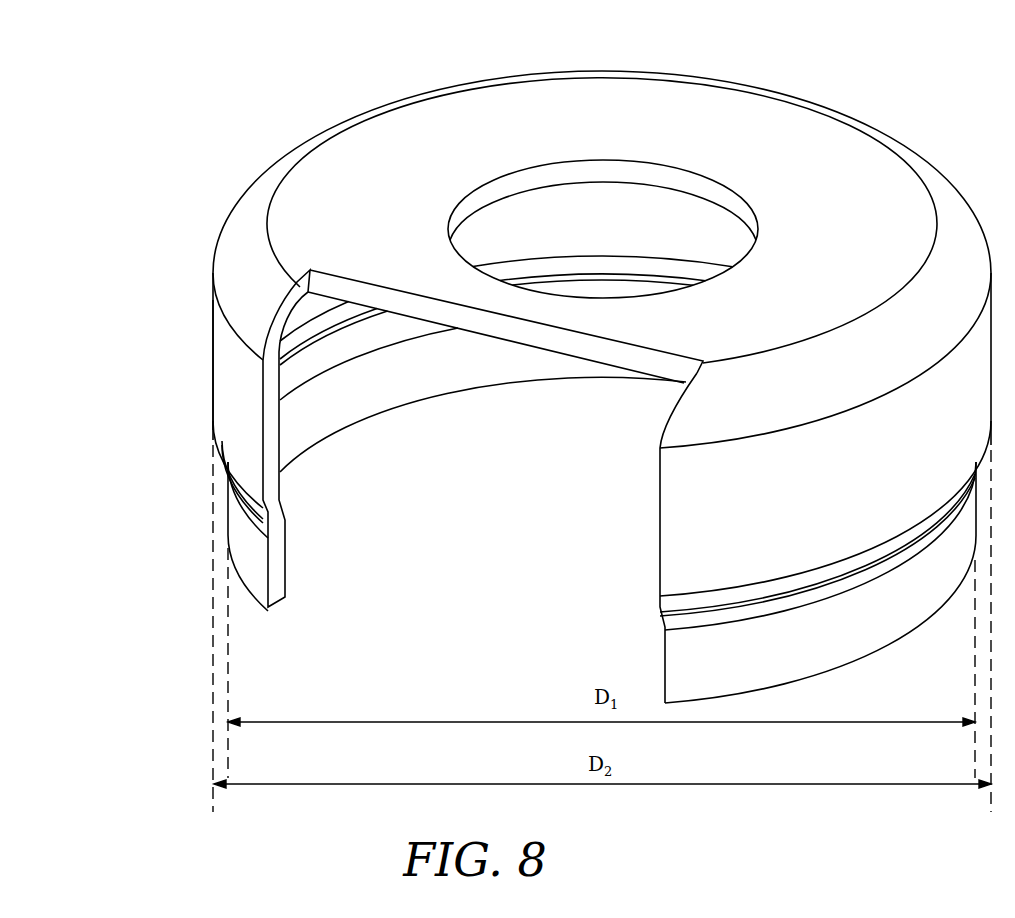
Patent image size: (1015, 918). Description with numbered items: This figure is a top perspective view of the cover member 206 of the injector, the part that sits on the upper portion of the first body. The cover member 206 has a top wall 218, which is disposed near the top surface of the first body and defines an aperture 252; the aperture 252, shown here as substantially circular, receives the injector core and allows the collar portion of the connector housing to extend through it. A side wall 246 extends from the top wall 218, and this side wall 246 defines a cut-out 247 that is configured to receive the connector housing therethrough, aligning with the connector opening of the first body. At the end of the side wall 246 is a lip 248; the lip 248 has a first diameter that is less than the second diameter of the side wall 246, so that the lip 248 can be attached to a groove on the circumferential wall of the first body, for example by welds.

The cover member 206 is at (875, 126).
The top wall 218 is at (407, 137).
The aperture 252 is at (598, 232).
The side wall 246 is at (222, 335).
The lip 248 is at (225, 502).
The cut-out 247 is at (474, 628).